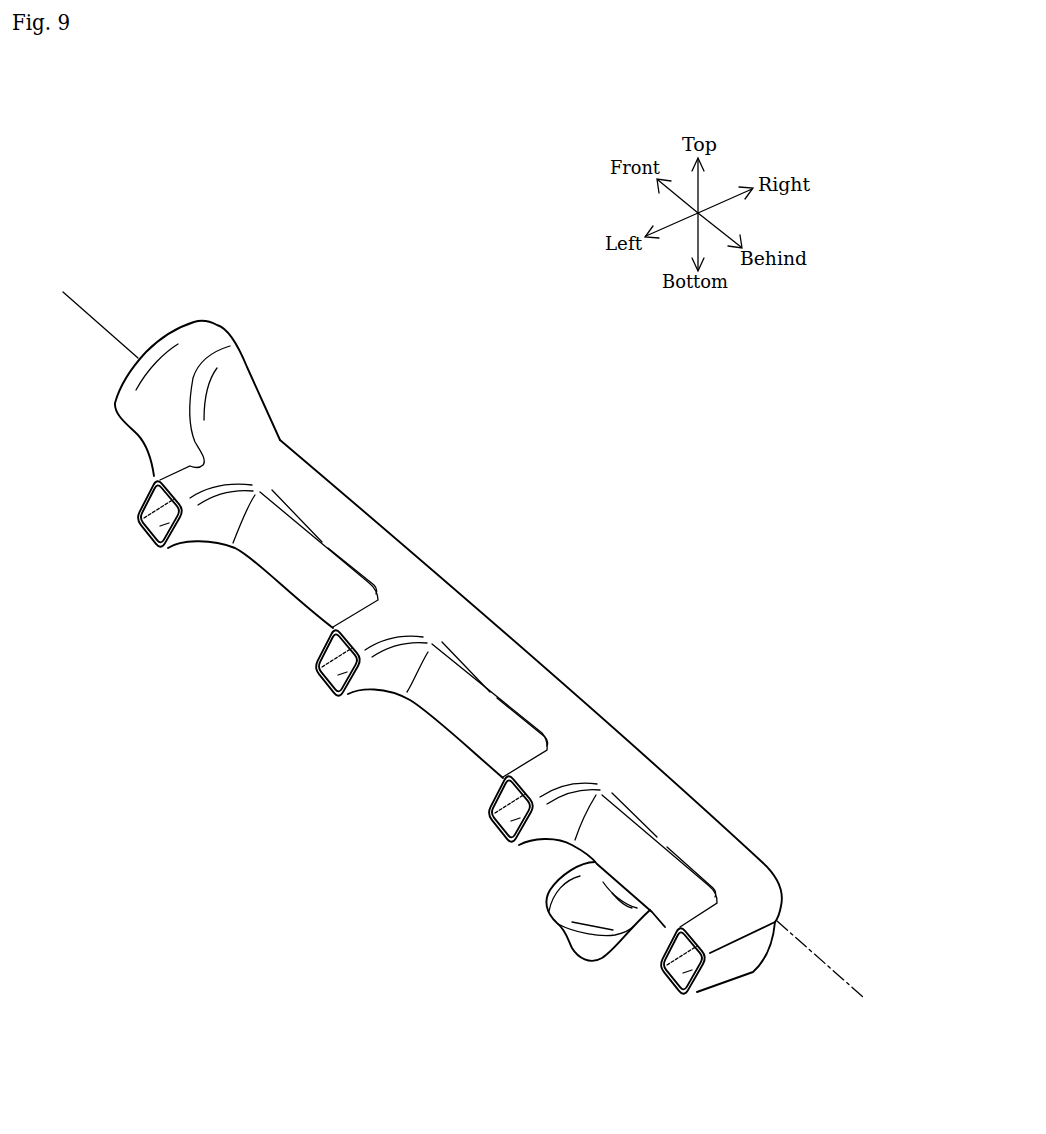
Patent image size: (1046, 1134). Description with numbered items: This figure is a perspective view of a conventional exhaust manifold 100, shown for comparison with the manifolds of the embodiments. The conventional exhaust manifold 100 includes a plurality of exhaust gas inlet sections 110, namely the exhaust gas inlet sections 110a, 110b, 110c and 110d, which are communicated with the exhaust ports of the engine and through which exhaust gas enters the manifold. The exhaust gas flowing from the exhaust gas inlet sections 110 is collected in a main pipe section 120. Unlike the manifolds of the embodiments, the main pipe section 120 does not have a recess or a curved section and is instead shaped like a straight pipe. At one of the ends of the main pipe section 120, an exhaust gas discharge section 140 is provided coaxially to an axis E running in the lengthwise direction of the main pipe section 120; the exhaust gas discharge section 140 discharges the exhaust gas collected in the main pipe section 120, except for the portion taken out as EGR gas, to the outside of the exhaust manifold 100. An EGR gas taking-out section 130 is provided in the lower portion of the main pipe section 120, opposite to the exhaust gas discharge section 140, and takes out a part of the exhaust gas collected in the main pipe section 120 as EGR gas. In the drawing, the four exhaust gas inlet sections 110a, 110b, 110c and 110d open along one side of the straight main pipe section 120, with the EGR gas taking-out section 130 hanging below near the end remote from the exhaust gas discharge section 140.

The conventional exhaust manifold 100 is at (522, 450).
The exhaust gas inlet sections 110 is at (689, 1024).
The exhaust gas inlet section 110a is at (670, 987).
The exhaust gas inlet section 110b is at (493, 833).
The exhaust gas inlet section 110c is at (321, 683).
The exhaust gas inlet section 110d is at (141, 530).
The main pipe section 120 is at (541, 687).
The EGR gas taking-out section 130 is at (580, 955).
The exhaust gas discharge section 140 is at (219, 324).
The axis E is at (110, 328).